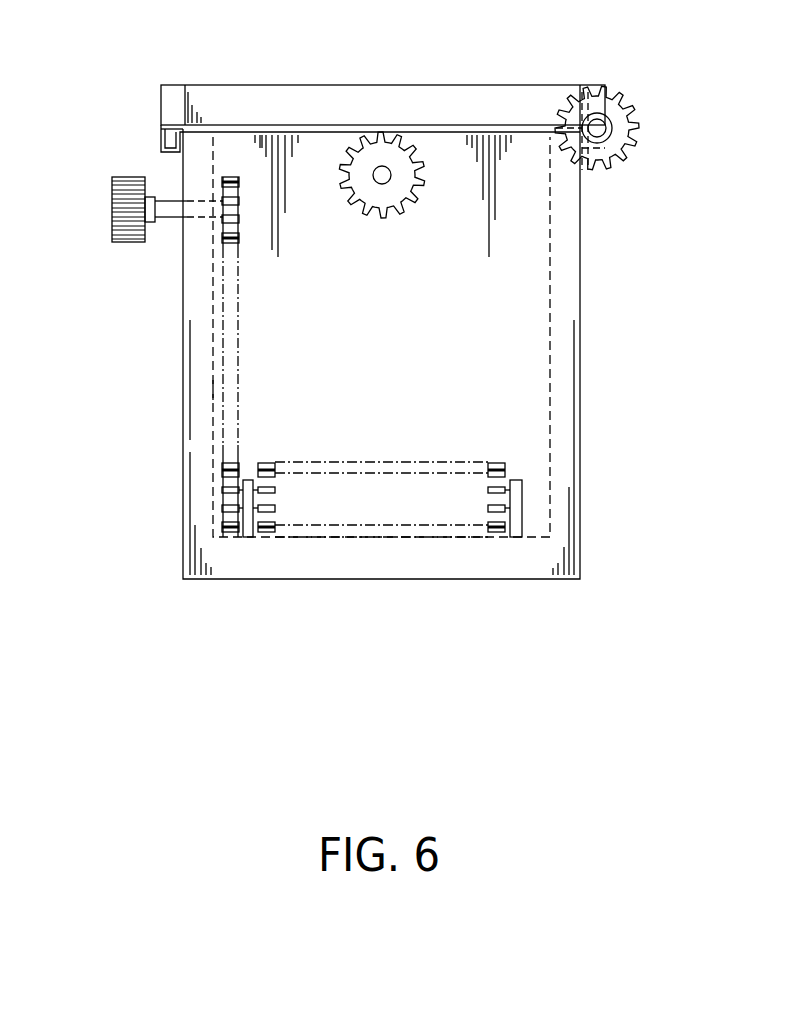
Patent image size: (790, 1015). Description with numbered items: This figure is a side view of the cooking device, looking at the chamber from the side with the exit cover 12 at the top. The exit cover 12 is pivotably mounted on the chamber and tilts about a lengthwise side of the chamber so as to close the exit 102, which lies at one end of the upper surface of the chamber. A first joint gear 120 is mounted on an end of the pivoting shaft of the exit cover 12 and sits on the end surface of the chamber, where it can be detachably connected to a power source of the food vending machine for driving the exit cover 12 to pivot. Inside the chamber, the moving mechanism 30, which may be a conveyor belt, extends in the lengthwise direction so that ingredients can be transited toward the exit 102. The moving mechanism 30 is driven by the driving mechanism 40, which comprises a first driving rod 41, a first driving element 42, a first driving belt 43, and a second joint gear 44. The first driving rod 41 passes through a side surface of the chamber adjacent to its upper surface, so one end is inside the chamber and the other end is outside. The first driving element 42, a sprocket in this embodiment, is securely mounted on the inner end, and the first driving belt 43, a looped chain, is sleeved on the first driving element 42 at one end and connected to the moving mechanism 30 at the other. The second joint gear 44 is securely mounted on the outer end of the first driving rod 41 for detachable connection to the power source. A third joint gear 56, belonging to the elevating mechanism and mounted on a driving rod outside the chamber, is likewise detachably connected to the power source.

The exit cover 12 is at (420, 95).
The exit 102 is at (276, 135).
The first joint gear 120 is at (623, 100).
The third joint gear 56 is at (405, 205).
The second joint gear 44 is at (122, 177).
The first driving rod 41 is at (168, 222).
The first driving element 42 is at (230, 176).
The driving mechanism 40 is at (246, 318).
The first driving belt 43 is at (228, 388).
The moving mechanism 30 is at (438, 452).